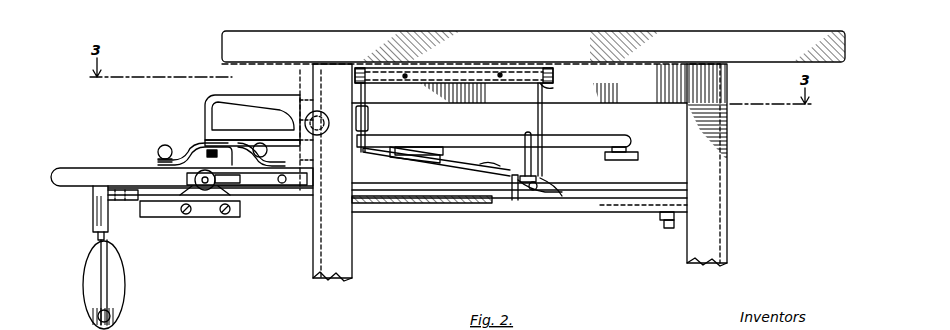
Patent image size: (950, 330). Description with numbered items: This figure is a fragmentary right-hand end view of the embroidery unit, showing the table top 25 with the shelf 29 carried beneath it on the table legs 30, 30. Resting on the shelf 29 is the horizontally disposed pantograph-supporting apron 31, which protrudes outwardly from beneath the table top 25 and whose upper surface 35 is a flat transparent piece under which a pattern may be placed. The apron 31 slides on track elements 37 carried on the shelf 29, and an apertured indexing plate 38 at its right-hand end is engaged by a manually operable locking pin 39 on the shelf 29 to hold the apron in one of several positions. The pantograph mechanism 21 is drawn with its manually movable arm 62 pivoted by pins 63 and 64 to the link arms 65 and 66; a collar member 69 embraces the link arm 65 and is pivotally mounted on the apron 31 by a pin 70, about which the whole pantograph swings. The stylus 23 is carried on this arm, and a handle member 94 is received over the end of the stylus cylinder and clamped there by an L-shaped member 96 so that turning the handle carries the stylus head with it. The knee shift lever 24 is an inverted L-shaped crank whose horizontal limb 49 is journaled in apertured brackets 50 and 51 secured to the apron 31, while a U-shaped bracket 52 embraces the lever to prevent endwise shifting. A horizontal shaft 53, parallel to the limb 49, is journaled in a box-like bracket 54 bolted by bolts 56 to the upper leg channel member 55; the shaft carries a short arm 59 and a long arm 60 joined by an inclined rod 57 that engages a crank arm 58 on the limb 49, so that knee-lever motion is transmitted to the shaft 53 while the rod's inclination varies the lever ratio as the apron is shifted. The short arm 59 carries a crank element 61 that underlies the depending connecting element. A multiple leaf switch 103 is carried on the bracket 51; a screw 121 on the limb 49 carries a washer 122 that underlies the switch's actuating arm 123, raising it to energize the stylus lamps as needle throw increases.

The pantograph mechanism 21 is at (174, 136).
The stylus 23 is at (198, 101).
The knee shift lever 24 is at (123, 294).
The table top 25 is at (742, 31).
The shelf 29 is at (613, 208).
The table legs 30 is at (712, 182).
The pantograph-supporting apron 31 is at (88, 164).
The upper surface 35 is at (136, 154).
The track elements 37 is at (492, 192).
The indexing plate 38 is at (274, 186).
The locking pin 39 is at (207, 190).
The horizontal limb 49 is at (167, 196).
The apertured bracket 50 is at (137, 202).
The apertured bracket 51 is at (518, 192).
The U-shaped bracket 52 is at (93, 211).
The shaft 53 is at (515, 70).
The box-like bracket 54 is at (550, 86).
The upper leg channel member 55 is at (660, 100).
The bolts 56 is at (500, 74).
The rod 57 is at (481, 165).
The crank arm 58 is at (532, 152).
The short arm 59 is at (366, 100).
The long arm 60 is at (543, 119).
The crank element 61 is at (369, 122).
The manually movable arm 62 is at (434, 135).
The pin 63 is at (400, 148).
The pin 64 is at (639, 153).
The link arm 65 is at (452, 150).
The link arm 66 is at (630, 160).
The collar member 69 is at (425, 162).
The pin 70 is at (415, 200).
The handle member 94 is at (181, 146).
The L-shaped member 96 is at (272, 152).
The multiple leaf switch 103 is at (540, 178).
The screw 121 is at (537, 196).
The washer 122 is at (548, 192).
The actuating arm 123 is at (549, 186).